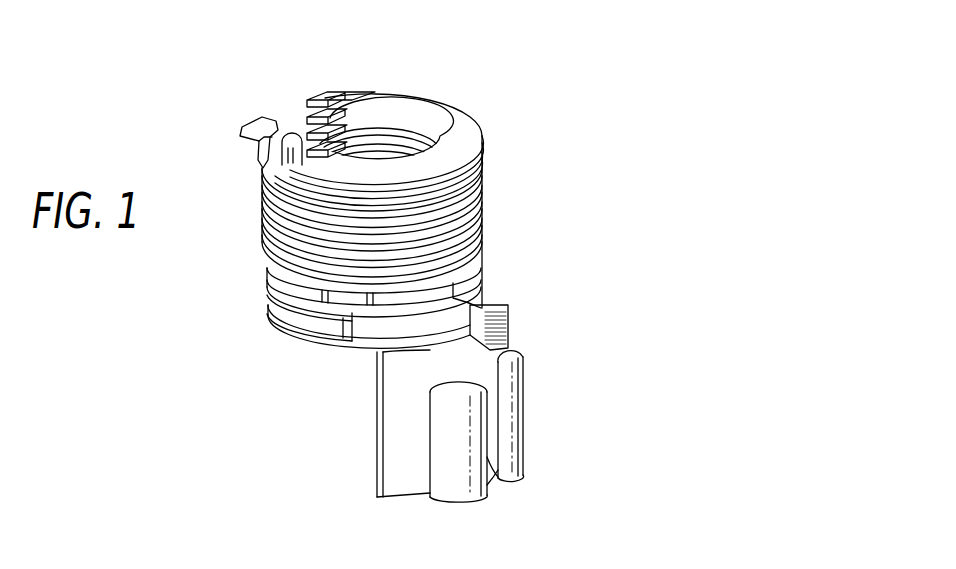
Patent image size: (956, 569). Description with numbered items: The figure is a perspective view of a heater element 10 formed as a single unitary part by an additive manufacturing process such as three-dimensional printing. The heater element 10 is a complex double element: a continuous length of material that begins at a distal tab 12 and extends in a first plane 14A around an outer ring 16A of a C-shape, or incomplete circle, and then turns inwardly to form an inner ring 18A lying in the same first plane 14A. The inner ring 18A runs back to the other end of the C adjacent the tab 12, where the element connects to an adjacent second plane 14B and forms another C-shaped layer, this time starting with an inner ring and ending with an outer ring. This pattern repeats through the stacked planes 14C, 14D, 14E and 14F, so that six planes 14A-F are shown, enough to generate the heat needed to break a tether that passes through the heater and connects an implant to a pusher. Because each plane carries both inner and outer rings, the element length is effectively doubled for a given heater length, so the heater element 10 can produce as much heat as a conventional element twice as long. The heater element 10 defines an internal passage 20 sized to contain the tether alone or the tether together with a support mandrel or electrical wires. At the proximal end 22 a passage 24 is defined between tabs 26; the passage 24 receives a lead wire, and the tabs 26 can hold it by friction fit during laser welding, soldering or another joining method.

The heater element 10 is at (637, 173).
The distal tab 12 is at (250, 127).
The first plane 14A is at (483, 143).
The second plane 14B is at (483, 162).
The third plane 14C is at (483, 178).
The fourth plane 14D is at (483, 197).
The fifth plane 14E is at (483, 213).
The sixth plane 14F is at (483, 232).
The outer ring 16A is at (455, 110).
The inner ring 18A is at (413, 113).
The internal passage 20 is at (380, 133).
The proximal end 22 is at (383, 487).
The passage 24 is at (497, 483).
The tabs 26 is at (463, 498).